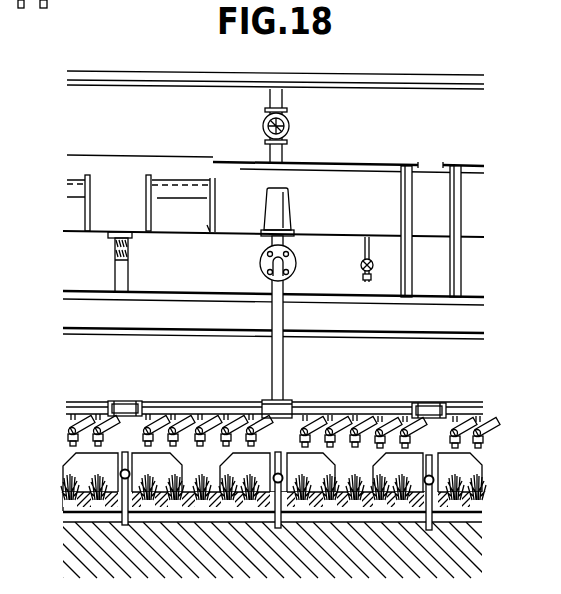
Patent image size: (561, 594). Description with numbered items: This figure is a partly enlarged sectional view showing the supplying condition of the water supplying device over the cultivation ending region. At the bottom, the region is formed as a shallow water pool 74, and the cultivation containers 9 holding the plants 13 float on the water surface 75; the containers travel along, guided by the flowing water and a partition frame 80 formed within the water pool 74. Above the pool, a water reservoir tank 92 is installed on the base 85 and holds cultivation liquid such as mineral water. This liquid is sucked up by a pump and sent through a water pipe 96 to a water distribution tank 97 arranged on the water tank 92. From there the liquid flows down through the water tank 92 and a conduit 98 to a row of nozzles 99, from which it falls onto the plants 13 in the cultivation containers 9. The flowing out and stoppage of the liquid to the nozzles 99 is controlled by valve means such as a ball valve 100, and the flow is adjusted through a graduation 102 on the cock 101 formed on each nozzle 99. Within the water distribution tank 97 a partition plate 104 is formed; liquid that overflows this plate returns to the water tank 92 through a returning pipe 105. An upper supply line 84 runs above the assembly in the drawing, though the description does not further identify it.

The supply line 84 is at (374, 76).
The water pipe 96 is at (123, 79).
The water distribution tank 97 is at (204, 182).
The partition plate 104 is at (143, 183).
The ball valve 100 is at (273, 212).
The returning pipe 105 is at (118, 273).
The water reservoir tank 92 is at (462, 317).
The base 85 is at (462, 372).
The conduit 98 is at (285, 369).
The nozzles 99 is at (152, 403).
The cock 101 is at (185, 403).
The graduation 102 is at (262, 406).
The partition frame 80 is at (279, 455).
The plants 13 is at (203, 495).
The cultivation containers 9 is at (258, 514).
The water pool 74 is at (358, 517).
The water surface 75 is at (123, 495).